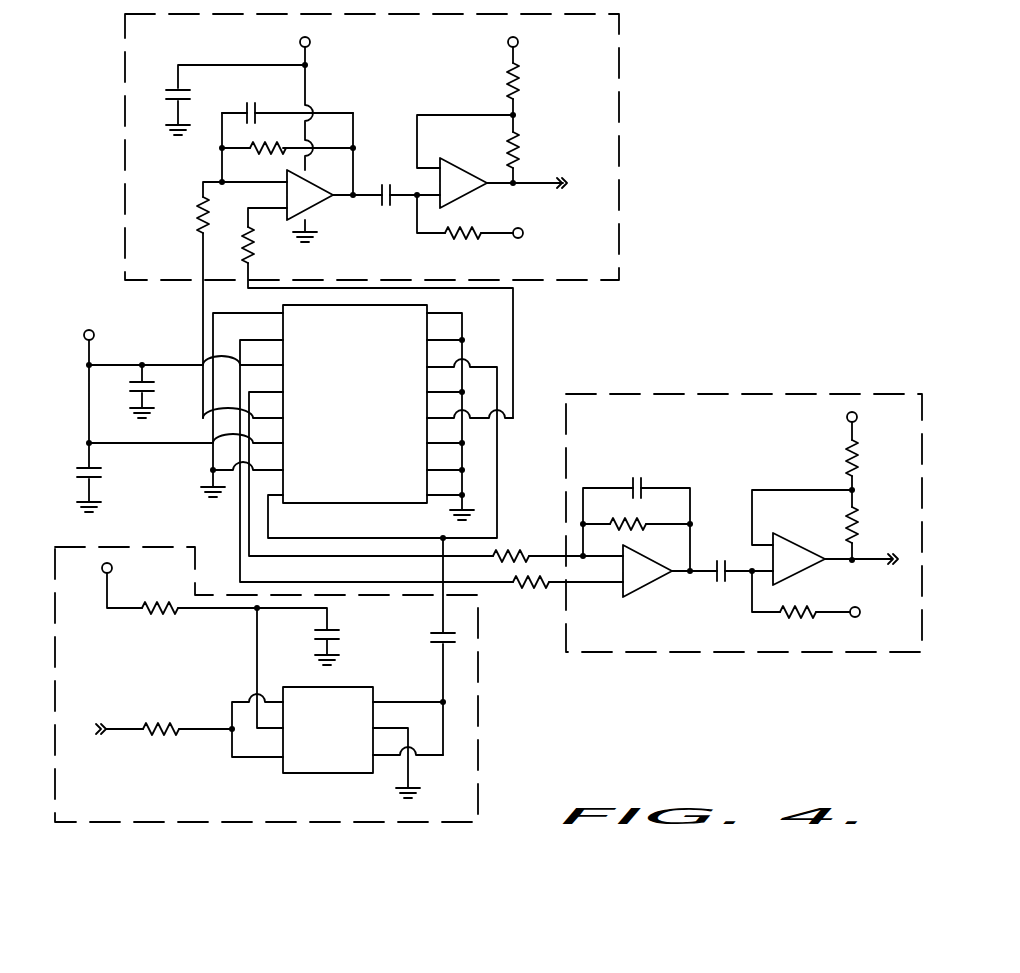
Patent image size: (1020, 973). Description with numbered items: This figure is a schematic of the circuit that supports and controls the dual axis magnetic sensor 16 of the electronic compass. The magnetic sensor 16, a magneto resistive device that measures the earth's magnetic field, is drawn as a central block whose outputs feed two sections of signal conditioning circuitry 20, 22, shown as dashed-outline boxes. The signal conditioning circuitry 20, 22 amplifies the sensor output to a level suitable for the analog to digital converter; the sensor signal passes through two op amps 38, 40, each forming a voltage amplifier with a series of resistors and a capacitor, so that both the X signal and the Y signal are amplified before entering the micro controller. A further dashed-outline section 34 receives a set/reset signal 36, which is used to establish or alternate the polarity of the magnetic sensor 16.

The magnetic sensor 16 is at (701, 293).
The signal conditioning circuitry 20 is at (800, 394).
The signal conditioning circuitry 22 is at (619, 137).
The input section 34 is at (480, 700).
The set/reset signal 36 is at (100, 728).
The op amp 38 is at (308, 198).
The op amp 40 is at (460, 190).